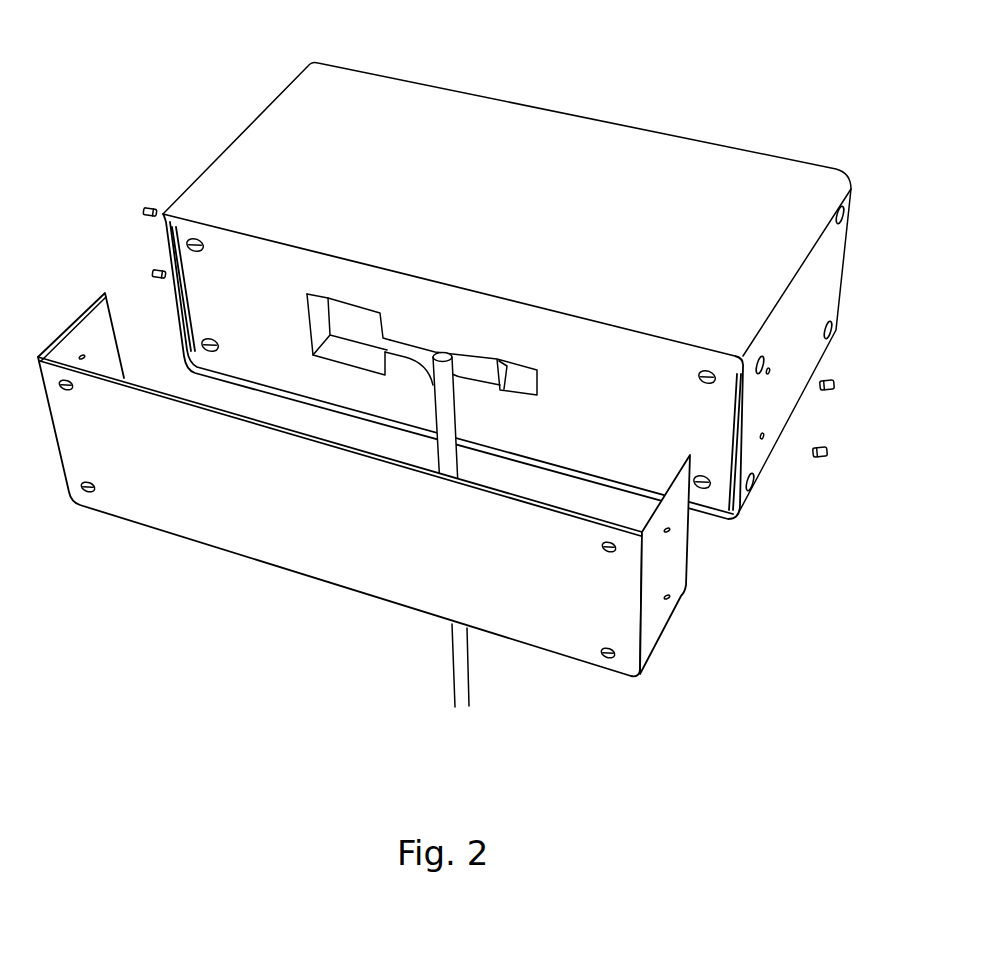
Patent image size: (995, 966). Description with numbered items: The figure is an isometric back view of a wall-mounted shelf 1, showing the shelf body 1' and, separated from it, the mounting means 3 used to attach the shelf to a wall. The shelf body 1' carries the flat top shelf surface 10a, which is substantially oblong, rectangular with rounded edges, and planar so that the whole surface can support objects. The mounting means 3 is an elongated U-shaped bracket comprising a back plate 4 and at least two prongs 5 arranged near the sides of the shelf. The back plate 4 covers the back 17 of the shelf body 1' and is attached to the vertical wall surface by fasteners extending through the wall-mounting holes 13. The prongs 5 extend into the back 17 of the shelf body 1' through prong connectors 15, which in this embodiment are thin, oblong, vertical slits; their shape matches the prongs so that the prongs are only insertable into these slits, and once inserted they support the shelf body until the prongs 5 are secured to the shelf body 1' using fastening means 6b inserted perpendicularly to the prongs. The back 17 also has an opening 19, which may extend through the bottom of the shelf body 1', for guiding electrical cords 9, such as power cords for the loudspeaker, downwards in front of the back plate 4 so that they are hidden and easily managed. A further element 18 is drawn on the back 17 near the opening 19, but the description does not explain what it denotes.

The wall-mounted shelf 1 is at (445, 361).
The shelf body 1' is at (497, 291).
The mounting means 3 is at (96, 251).
The back plate 4 is at (200, 529).
The prongs 5 is at (78, 318).
The fastening means 6b is at (821, 461).
The electrical cords 9 is at (465, 686).
The top shelf surface 10a is at (777, 175).
The wall-mounting holes 13 is at (86, 501).
The prong connectors 15 is at (160, 243).
The back 17 is at (618, 331).
The opening 18 is at (525, 307).
The opening 19 is at (415, 350).